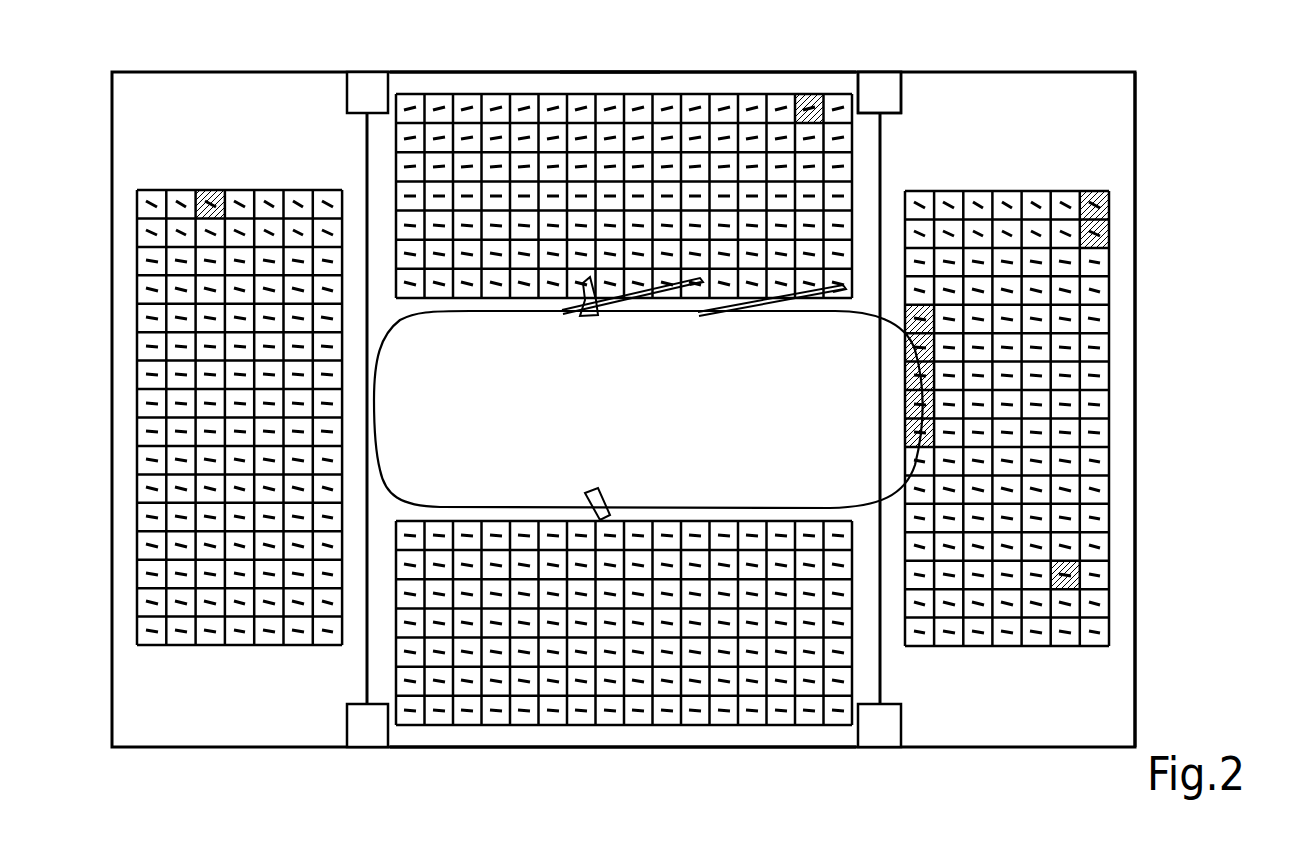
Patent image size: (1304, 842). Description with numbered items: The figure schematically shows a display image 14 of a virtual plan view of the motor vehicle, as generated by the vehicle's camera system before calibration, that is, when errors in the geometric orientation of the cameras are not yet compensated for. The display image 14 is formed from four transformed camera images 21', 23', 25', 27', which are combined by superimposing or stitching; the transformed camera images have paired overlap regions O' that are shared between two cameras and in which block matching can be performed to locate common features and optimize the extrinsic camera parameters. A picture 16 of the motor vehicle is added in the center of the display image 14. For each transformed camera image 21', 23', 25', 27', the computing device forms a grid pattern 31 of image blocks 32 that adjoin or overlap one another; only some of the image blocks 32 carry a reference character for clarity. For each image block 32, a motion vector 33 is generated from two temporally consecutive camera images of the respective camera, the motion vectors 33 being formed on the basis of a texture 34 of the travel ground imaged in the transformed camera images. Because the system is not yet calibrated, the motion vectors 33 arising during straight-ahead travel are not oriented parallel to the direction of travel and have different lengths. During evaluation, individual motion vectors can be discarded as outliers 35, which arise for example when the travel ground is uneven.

The display image 14 is at (893, 74).
The picture of the motor vehicle 16 is at (833, 292).
The transformed camera image 21' is at (623, 385).
The transformed camera image 23' is at (623, 57).
The transformed camera image 25' is at (623, 768).
The transformed camera image 27' is at (1080, 384).
The grid pattern 31 is at (262, 190).
The image blocks 32 is at (843, 97).
The motion vectors 33 is at (469, 108).
The texture 34 is at (585, 88).
The outliers 35 is at (1093, 240).
The overlap region O' is at (629, 413).